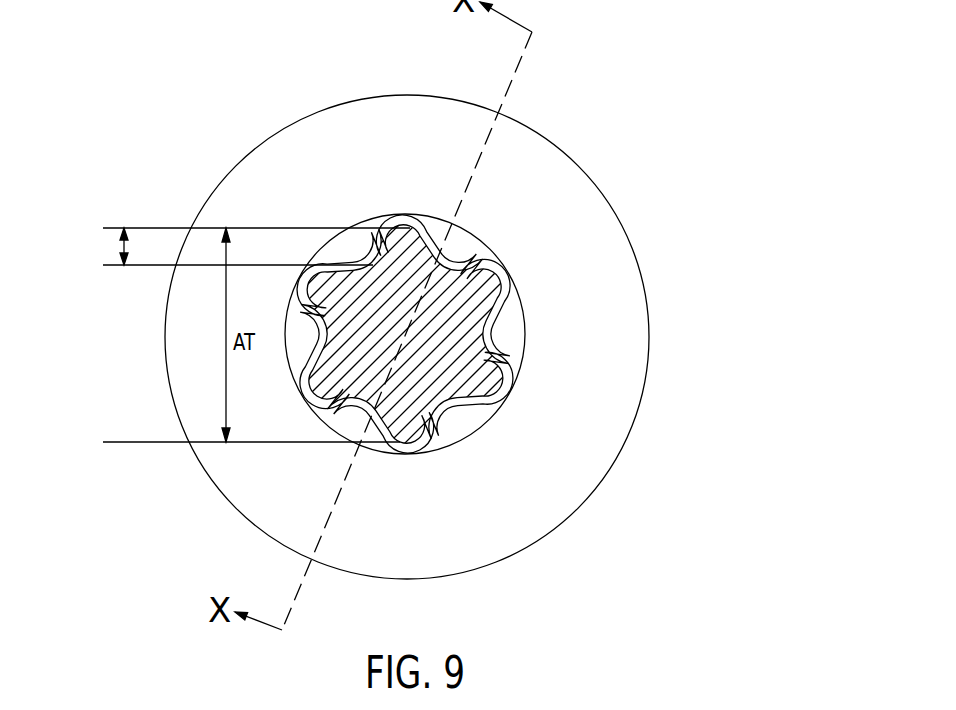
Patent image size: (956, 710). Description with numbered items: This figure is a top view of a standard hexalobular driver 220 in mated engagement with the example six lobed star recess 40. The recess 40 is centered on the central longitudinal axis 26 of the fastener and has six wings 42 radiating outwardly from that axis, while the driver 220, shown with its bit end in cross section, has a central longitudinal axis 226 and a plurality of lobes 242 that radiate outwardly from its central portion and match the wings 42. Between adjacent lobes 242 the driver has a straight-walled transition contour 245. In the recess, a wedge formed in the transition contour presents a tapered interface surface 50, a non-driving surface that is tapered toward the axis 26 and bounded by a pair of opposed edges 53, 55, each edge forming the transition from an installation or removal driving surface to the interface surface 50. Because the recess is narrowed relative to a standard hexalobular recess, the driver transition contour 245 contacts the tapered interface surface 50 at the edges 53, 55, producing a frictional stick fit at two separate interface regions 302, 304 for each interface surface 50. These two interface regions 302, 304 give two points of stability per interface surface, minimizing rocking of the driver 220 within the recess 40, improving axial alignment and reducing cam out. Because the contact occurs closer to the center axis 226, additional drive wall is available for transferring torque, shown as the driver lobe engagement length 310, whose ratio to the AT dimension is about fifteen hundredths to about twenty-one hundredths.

The driver lobe engagement length 310 is at (122, 246).
The six lobed star recess 40 is at (505, 377).
The interface region 302 is at (437, 262).
The hexalobular driver 220 is at (458, 302).
The transition contour 245 is at (351, 272).
The central longitudinal axis 26 is at (415, 455).
The tapered interface surface 50 is at (450, 272).
The interface region 304 is at (458, 263).
The opposed edge 53 is at (487, 323).
The opposed edge 55 is at (490, 348).
The wing 42 is at (416, 413).
The lobe 242 is at (482, 383).
The central longitudinal axis 226 is at (415, 455).